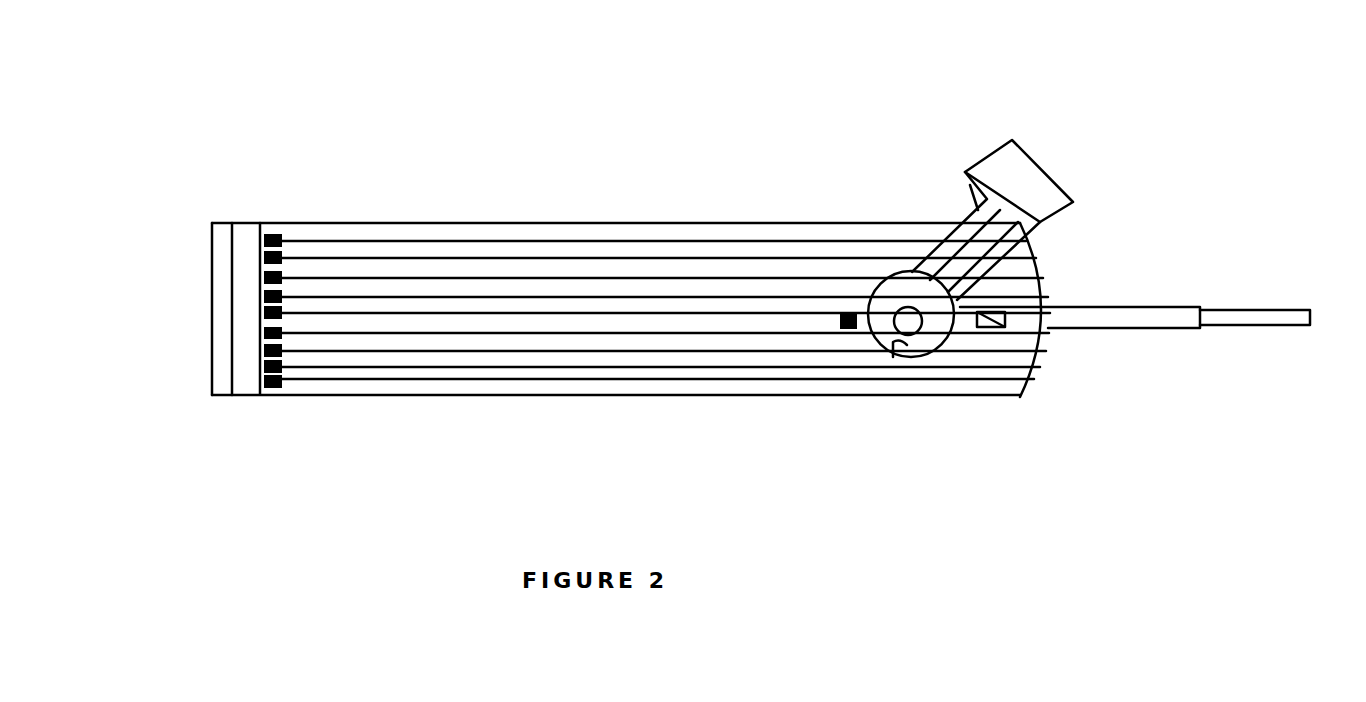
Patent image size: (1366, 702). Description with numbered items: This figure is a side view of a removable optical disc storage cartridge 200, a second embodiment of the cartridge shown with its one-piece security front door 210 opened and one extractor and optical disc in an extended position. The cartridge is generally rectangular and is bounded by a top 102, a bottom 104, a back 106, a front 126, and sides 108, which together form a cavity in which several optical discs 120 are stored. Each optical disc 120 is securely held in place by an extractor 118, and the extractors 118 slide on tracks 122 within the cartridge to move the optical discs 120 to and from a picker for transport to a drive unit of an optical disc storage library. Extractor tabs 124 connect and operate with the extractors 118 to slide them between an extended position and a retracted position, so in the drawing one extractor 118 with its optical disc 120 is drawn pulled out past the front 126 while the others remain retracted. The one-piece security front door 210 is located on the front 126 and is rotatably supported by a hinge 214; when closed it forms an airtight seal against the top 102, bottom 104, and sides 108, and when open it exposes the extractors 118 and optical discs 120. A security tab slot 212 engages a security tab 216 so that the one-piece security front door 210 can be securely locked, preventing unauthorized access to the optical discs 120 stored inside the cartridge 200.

The removable optical disc storage cartridge 200 is at (163, 141).
The top 102 is at (755, 222).
The bottom 104 is at (828, 397).
The back 106 is at (210, 233).
The sides 108 is at (1028, 386).
The extractors 118 is at (1178, 312).
The optical discs 120 is at (1297, 309).
The tracks 122 is at (313, 307).
The extractor tabs 124 is at (266, 232).
The front 126 is at (1090, 245).
The one-piece security front door 210 is at (1028, 168).
The security tab slot 212 is at (1043, 268).
The hinge 214 is at (902, 345).
The security tab 216 is at (1037, 336).